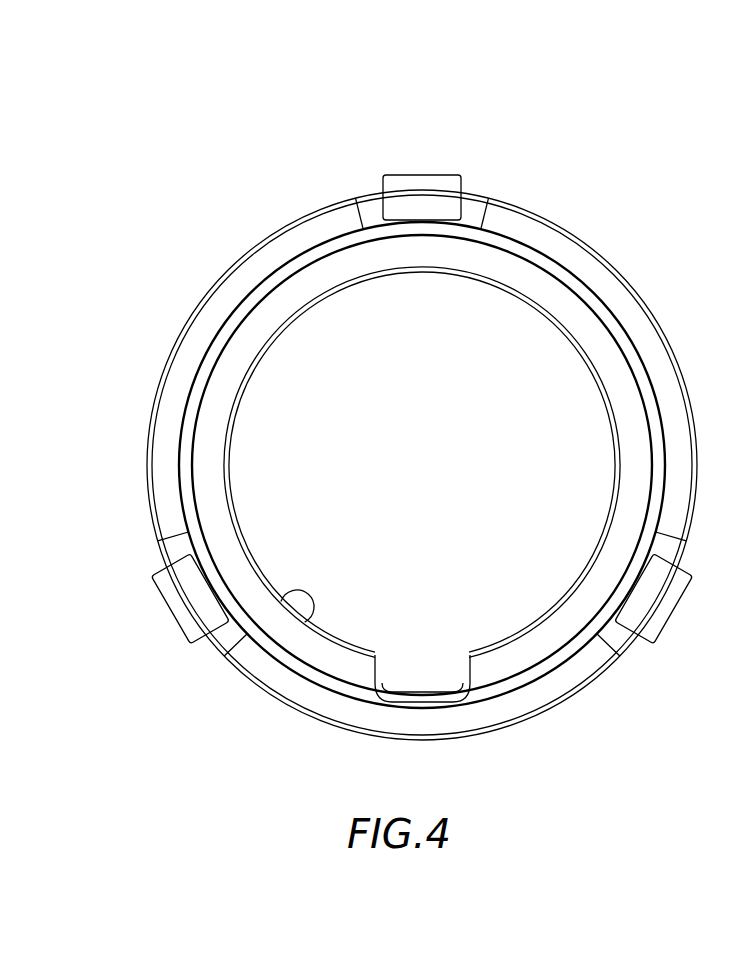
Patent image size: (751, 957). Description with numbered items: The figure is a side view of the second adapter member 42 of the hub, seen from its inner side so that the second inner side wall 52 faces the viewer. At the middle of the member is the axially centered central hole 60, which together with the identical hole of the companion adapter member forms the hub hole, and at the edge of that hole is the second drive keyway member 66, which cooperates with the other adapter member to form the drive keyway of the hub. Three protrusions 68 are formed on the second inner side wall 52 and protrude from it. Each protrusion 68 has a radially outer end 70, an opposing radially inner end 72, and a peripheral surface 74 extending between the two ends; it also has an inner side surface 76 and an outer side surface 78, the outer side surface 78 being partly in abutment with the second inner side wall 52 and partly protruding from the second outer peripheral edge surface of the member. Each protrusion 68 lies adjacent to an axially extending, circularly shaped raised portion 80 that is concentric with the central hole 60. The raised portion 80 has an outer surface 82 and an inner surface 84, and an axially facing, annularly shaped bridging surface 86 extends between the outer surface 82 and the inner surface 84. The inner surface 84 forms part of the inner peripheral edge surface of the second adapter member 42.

The second adapter member 42 is at (160, 113).
The second inner side wall 52 is at (272, 250).
The central hole 60 is at (247, 487).
The second drive keyway member 66 is at (452, 653).
The protrusion 68 is at (436, 193).
The radially outer end 70 is at (416, 174).
The radially inner end 72 is at (427, 221).
The peripheral surface 74 is at (158, 578).
The inner side surface 76 is at (186, 602).
The outer side surface 78 is at (683, 577).
The raised portion 80 is at (626, 387).
The outer surface 82 is at (592, 300).
The inner surface 84 is at (290, 622).
The bridging surface 86 is at (573, 610).